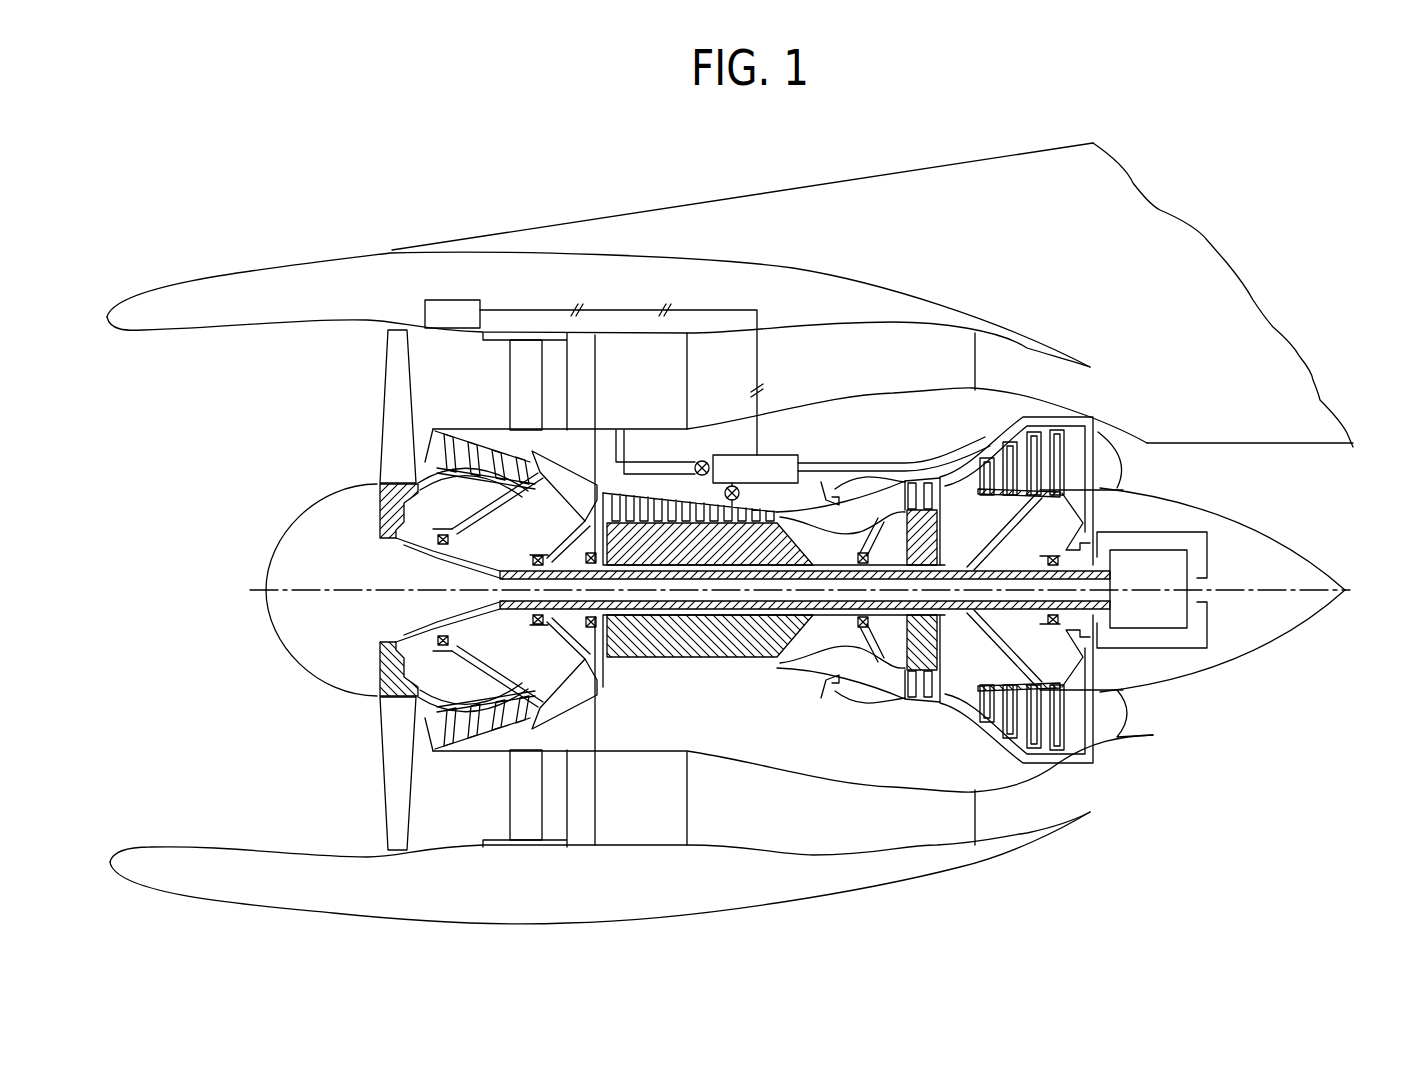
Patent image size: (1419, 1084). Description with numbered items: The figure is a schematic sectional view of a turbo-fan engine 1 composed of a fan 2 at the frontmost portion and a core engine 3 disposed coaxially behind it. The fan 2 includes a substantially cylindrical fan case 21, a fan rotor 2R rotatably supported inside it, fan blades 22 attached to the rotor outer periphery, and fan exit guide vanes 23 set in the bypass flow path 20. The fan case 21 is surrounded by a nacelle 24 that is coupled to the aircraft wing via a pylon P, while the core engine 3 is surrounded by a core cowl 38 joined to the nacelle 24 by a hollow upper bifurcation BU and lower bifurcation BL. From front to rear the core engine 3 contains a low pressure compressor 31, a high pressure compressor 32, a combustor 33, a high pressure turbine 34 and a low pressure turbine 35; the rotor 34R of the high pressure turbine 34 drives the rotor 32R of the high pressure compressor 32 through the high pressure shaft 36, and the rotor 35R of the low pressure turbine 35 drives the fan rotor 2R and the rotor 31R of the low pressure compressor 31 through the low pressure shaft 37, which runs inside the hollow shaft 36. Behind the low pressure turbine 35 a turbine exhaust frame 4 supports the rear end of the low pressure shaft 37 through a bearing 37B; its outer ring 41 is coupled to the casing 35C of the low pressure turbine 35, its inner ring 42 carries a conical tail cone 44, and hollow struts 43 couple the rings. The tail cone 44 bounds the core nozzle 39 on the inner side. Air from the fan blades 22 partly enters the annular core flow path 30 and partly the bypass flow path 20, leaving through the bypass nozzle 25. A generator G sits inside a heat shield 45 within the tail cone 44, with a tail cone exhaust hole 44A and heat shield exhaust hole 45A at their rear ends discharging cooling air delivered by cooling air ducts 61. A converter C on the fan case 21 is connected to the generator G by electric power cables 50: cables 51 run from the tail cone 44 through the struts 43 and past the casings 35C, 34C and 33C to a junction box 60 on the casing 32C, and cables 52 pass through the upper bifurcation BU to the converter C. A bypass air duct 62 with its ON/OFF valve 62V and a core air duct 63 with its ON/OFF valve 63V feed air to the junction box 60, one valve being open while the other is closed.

The turbo-fan engine 1 is at (196, 453).
The fan 2 is at (364, 789).
The fan rotor 2R is at (383, 680).
The core engine 3 is at (768, 745).
The turbine exhaust frame 4 is at (1115, 428).
The bypass flow path 20 is at (475, 811).
The fan case 21 is at (460, 847).
The fan blades 22 is at (393, 747).
The fan exit guide vanes 23 is at (527, 817).
The nacelle 24 is at (185, 933).
The bypass nozzle 25 is at (1110, 792).
The core flow path 30 is at (587, 691).
The low pressure compressor 31 is at (532, 740).
The rotor of the low pressure compressor 31R is at (543, 690).
The high pressure compressor 32 is at (654, 702).
The casing of the high pressure compressor 32C is at (766, 492).
The rotor of the high pressure compressor 32R is at (690, 637).
The combustor 33 is at (834, 706).
The casing of the combustor 33C is at (843, 484).
The high pressure turbine 34 is at (918, 720).
The casing of the high pressure turbine 34C is at (917, 478).
The rotor of the high pressure turbine 34R is at (952, 695).
The low pressure turbine 35 is at (1017, 765).
The casing of the low pressure turbine 35C is at (968, 455).
The rotor of the low pressure turbine 35R is at (995, 720).
The high pressure shaft 36 is at (852, 628).
The low pressure shaft 37 is at (740, 612).
The bearing 37B is at (1055, 650).
The core cowl 38 is at (940, 787).
The core nozzle 39 is at (1150, 717).
The outer ring 41 is at (1125, 441).
The inner ring 42 is at (1123, 488).
The hollow struts 43 is at (1113, 456).
The tail cone 44 is at (1260, 523).
The tail cone exhaust hole 44A is at (1347, 582).
The heat shield 45 is at (1208, 632).
The heat shield exhaust hole 45A is at (1217, 598).
The electric power cables 50 is at (783, 133).
The electric power cables 51 is at (945, 462).
The electric power cables 52 is at (745, 310).
The junction box 60 is at (797, 456).
The cooling air ducts 61 is at (1047, 417).
The bypass air duct 62 is at (660, 462).
The bypass air ON/OFF valve 62V is at (700, 460).
The core air duct 63 is at (736, 484).
The core air ON/OFF valve 63V is at (724, 493).
The converter C is at (450, 300).
The pylon P is at (1058, 190).
The generator G is at (1160, 560).
The upper bifurcation BU is at (860, 357).
The lower bifurcation BL is at (887, 827).